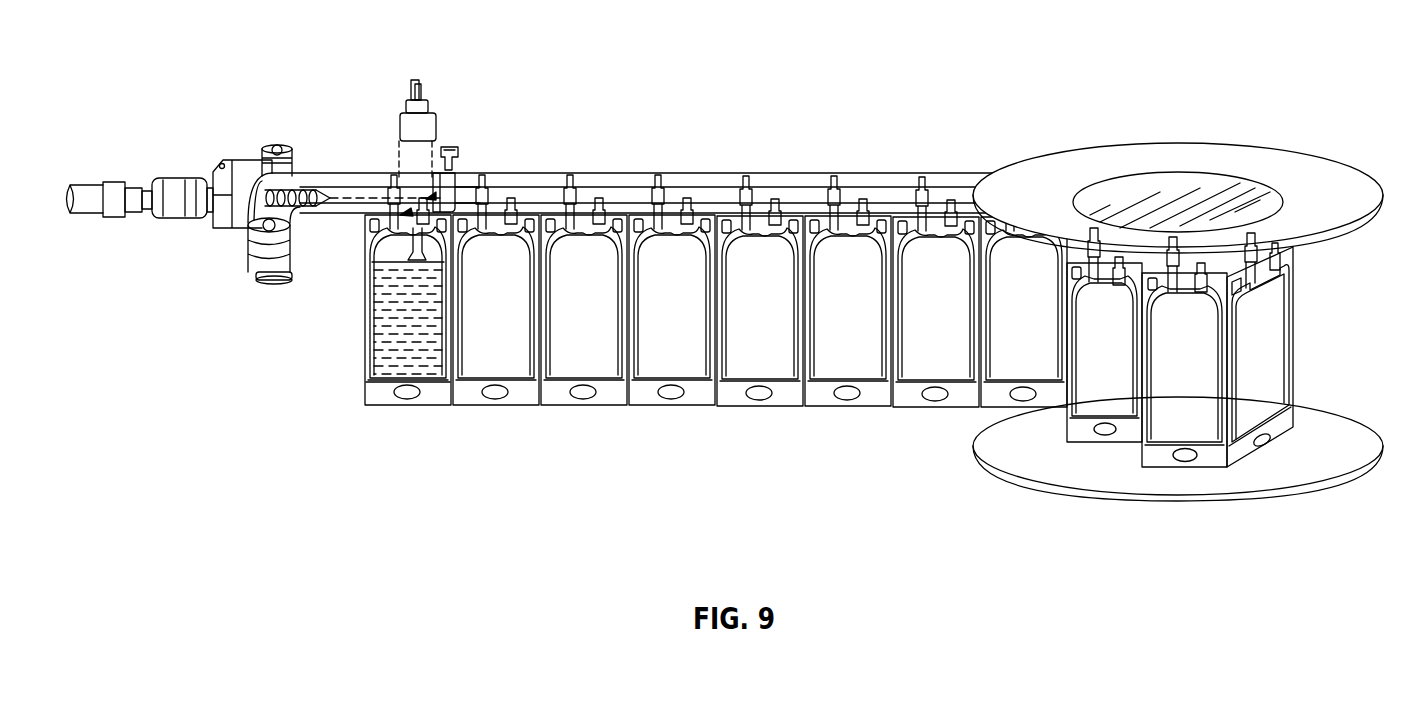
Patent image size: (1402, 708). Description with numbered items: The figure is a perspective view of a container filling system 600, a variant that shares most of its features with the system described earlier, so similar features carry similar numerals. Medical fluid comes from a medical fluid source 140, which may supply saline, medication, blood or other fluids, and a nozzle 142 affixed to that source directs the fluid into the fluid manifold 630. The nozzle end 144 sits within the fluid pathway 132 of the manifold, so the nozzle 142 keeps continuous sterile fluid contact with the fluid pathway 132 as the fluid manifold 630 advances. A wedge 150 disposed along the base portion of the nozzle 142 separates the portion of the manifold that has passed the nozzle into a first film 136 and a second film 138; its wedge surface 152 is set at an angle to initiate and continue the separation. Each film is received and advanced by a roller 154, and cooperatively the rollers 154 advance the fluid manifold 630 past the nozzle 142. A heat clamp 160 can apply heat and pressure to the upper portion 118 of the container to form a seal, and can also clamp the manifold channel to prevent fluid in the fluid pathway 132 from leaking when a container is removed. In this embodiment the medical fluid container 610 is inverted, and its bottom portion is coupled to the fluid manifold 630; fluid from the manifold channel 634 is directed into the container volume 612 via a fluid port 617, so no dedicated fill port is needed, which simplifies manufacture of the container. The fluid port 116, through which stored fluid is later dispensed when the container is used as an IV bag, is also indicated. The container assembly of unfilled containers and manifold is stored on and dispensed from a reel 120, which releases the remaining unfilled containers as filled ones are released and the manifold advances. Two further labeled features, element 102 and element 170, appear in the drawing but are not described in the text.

The container filling system 600 is at (1015, 60).
The reel 120 is at (1295, 178).
The medical fluid source 140 is at (90, 190).
The nozzle 142 is at (166, 186).
The wedge surface 152 is at (222, 208).
The wedge 150 is at (232, 165).
The second film 138 is at (262, 155).
The roller 154 is at (272, 148).
The first film 136 is at (250, 247).
The nozzle end 144 is at (297, 190).
The fluid path 102 is at (343, 193).
The heat clamp 160 is at (420, 120).
The clamp 170 is at (450, 150).
The fluid pathway 132 is at (462, 183).
The manifold channel 634 is at (463, 195).
The fluid manifold 630 is at (732, 175).
The medical fluid container 610 is at (379, 324).
The container volume 612 is at (410, 350).
The fluid port 617 is at (420, 224).
The upper portion 118 is at (385, 406).
The fluid port 116 is at (388, 220).